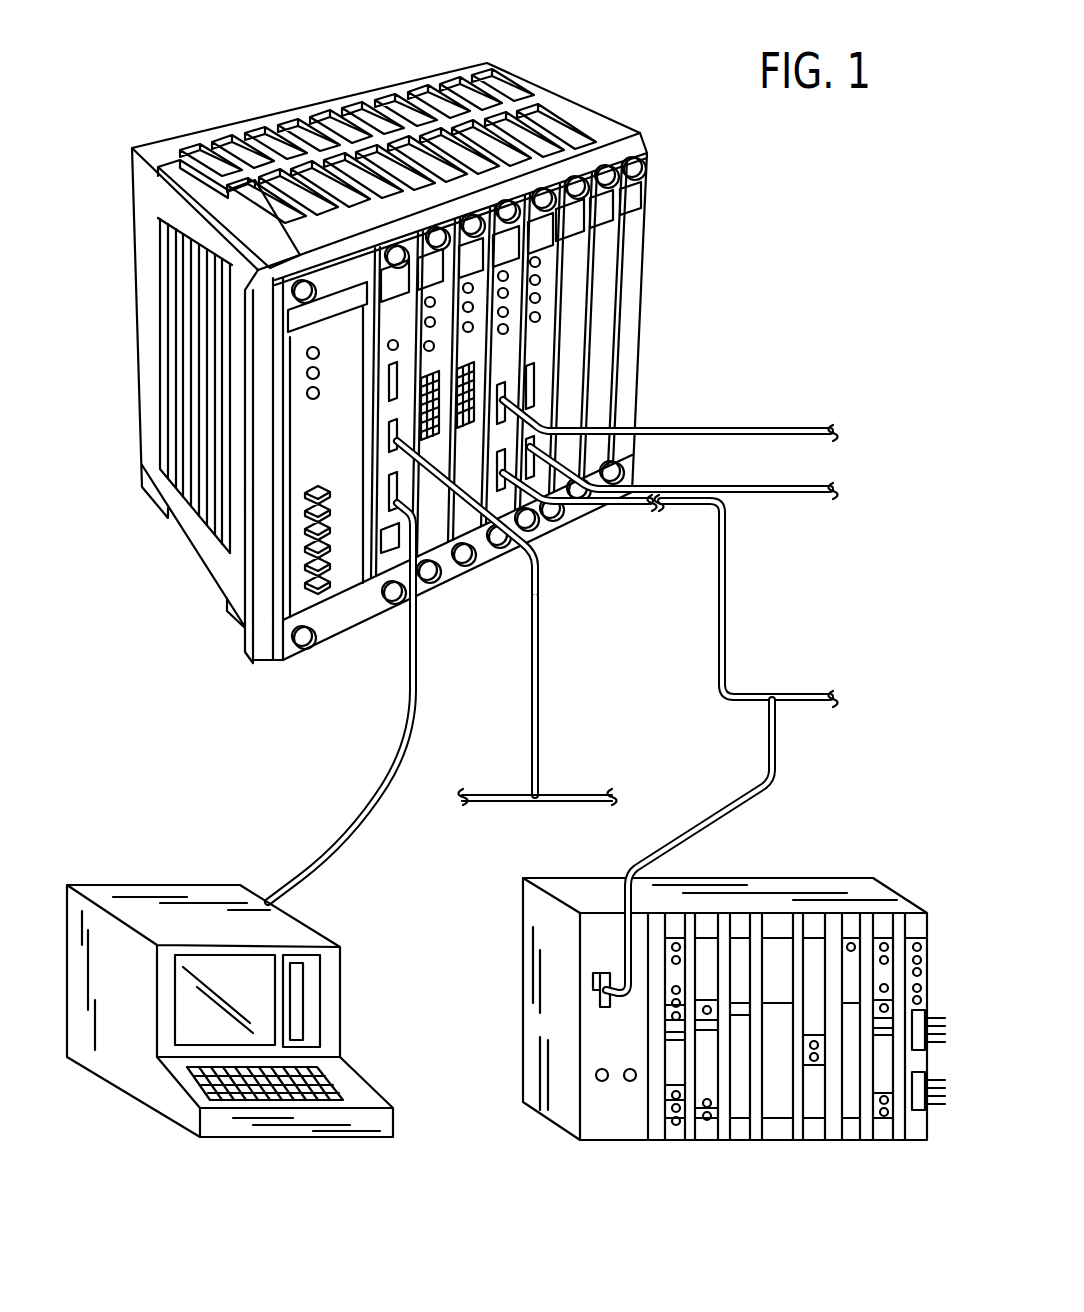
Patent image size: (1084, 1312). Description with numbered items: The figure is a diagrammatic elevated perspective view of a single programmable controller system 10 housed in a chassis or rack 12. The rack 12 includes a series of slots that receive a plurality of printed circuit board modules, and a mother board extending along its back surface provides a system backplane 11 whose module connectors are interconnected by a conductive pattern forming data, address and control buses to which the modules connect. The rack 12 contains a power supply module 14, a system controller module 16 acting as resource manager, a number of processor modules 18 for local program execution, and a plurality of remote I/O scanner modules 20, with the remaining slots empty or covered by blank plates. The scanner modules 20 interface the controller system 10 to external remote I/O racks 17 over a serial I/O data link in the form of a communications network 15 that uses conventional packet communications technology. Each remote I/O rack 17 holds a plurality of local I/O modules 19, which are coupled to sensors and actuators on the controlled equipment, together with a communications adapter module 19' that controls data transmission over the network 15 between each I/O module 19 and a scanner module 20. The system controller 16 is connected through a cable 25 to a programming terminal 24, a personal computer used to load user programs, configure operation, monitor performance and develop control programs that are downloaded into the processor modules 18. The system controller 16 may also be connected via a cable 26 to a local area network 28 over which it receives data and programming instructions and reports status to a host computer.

The programmable controller system 10 is at (356, 363).
The system backplane 11 is at (310, 107).
The chassis or rack 12 is at (192, 520).
The power supply module 14 is at (290, 670).
The communications network 15 is at (690, 430).
The system controller module 16 is at (380, 623).
The remote I/O rack 17 is at (693, 954).
The processor module 18 is at (492, 585).
The local I/O module 19 is at (796, 1060).
The communications adapter module 19' is at (586, 1083).
The remote I/O scanner module 20 is at (540, 548).
The programming terminal 24 is at (338, 980).
The cable 25 is at (383, 813).
The cable 26 is at (541, 682).
The local area network 28 is at (497, 790).